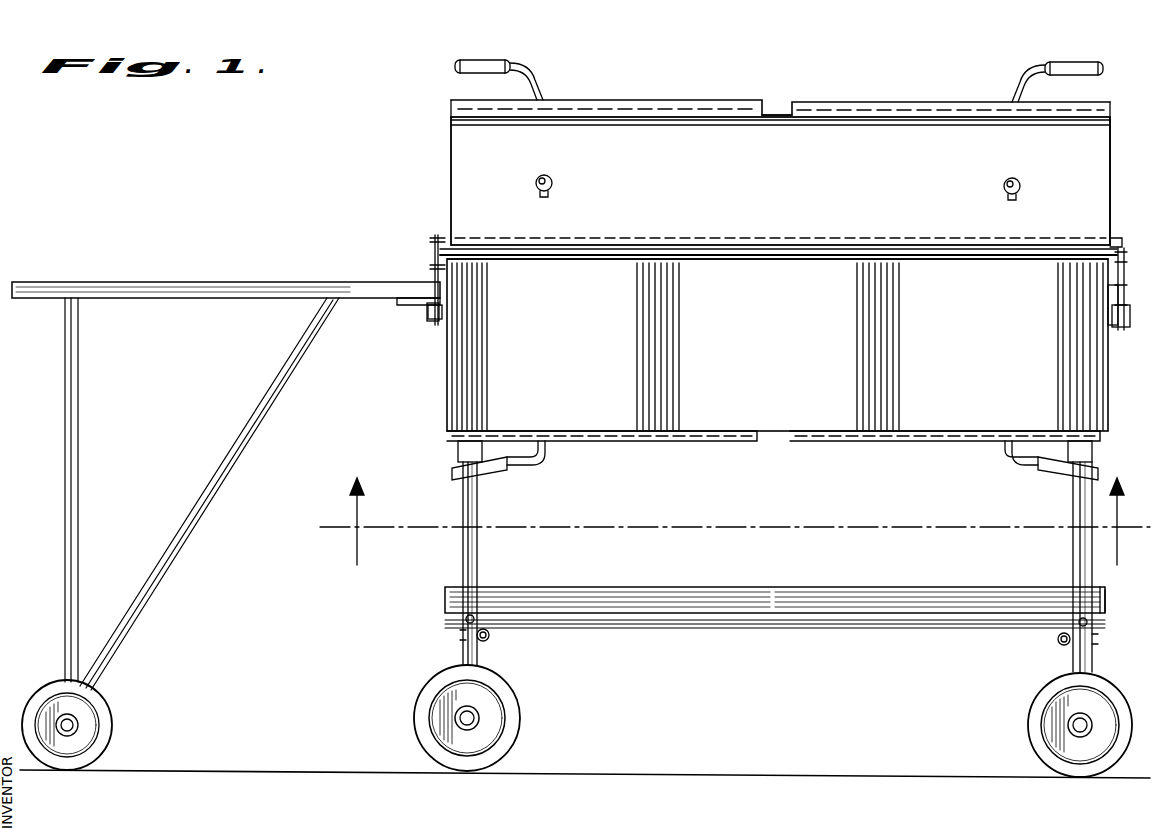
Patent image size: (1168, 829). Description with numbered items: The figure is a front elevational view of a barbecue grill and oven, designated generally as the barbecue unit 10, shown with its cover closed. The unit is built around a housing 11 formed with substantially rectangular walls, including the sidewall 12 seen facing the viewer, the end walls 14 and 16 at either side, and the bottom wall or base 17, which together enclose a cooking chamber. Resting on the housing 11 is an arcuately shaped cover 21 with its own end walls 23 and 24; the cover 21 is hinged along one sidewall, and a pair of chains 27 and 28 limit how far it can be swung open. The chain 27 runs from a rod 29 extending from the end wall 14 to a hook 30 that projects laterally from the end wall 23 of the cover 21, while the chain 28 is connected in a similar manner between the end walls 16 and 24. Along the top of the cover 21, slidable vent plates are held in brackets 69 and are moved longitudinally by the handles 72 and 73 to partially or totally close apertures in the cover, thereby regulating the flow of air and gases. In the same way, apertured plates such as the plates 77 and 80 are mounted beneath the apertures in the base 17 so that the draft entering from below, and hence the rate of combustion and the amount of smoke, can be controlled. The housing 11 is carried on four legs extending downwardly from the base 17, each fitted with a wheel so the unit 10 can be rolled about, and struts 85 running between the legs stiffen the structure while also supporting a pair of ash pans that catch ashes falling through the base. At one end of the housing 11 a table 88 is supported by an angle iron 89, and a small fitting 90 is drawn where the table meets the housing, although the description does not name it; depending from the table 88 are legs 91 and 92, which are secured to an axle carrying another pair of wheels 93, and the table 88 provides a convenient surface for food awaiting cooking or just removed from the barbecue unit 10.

The barbecue unit 10 is at (444, 130).
The housing 11 is at (763, 373).
The sidewall 12 is at (778, 400).
The end wall 14 is at (1108, 392).
The end wall 16 is at (447, 379).
The bottom wall or base 17 is at (852, 435).
The cover 21 is at (768, 115).
The end wall of cover 23 is at (1112, 186).
The end wall of cover 24 is at (472, 165).
The chain 27 is at (1108, 293).
The chain 28 is at (440, 250).
The rod 29 is at (1134, 289).
The hook 30 is at (1118, 240).
The brackets 69 is at (700, 108).
The handle 72 is at (488, 66).
The handle 73 is at (1075, 66).
The apertured plate 77 is at (932, 443).
The apertured plate 80 is at (648, 443).
The struts 85 is at (736, 622).
The table 88 is at (145, 287).
The angle iron 89 is at (402, 305).
The table clamp 90 is at (430, 312).
The leg 91 is at (65, 402).
The leg 92 is at (185, 540).
The wheels 93 is at (106, 718).